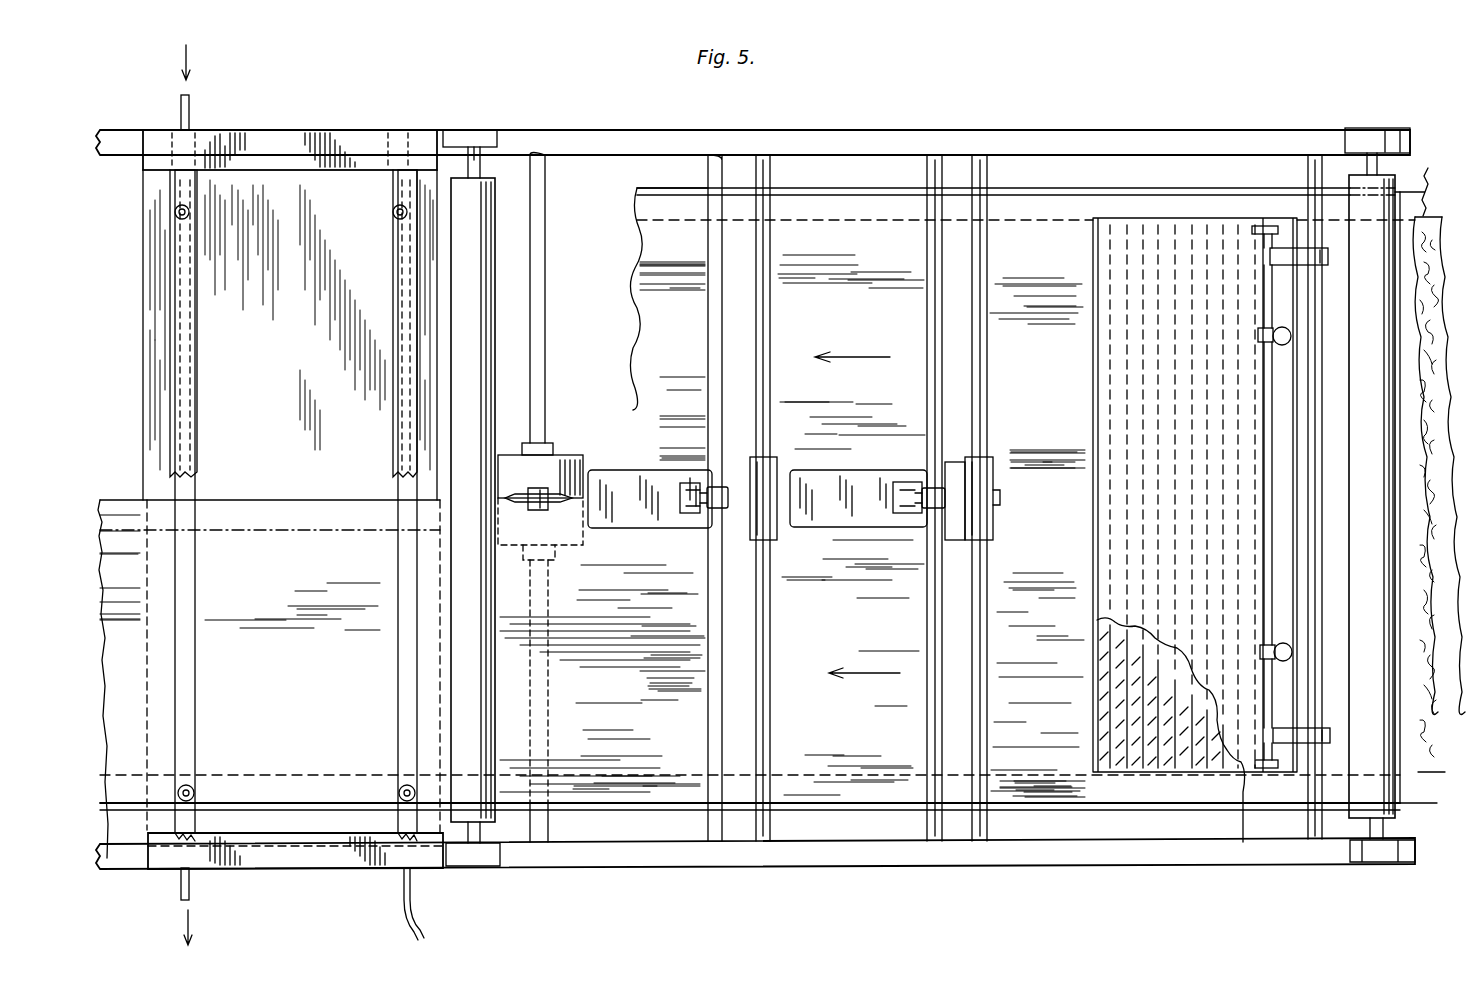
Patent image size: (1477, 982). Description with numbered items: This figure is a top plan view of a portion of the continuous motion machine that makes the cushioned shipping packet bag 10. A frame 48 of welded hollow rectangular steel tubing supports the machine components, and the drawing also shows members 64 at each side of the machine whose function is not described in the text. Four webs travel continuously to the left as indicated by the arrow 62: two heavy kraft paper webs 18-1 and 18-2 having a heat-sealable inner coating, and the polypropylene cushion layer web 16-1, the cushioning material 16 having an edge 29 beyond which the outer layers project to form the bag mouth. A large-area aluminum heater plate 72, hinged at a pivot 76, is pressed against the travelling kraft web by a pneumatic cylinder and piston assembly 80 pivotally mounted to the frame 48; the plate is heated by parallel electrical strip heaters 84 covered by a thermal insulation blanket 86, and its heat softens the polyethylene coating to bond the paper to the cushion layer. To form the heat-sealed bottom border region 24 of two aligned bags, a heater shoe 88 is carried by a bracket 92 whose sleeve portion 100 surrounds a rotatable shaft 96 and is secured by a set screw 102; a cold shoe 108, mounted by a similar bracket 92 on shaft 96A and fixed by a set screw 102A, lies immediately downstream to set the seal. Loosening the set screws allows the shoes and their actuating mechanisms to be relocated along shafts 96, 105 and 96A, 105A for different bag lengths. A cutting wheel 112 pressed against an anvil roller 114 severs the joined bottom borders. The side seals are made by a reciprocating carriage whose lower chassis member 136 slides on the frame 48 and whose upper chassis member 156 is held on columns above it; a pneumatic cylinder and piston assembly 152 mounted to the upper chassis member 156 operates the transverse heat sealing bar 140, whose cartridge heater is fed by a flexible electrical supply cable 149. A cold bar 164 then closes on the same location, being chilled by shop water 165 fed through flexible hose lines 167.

The cushioned shipping packet bag 10 is at (125, 660).
The cushioning layer 16 is at (812, 772).
The cushion layer web 16-1 is at (1443, 775).
The kraft paper web 18-1 is at (1205, 195).
The kraft paper web 18-2 is at (1125, 188).
The heat-sealed bottom border region 24 is at (285, 512).
The edge of the cushioning material 29 is at (848, 222).
The frame 48 is at (1085, 100).
The arrow indicating web travel 62 is at (895, 338).
The column 64 is at (495, 345).
The heater plate 72 is at (1092, 548).
The pivot 76 is at (1312, 825).
The pneumatic cylinder and piston assembly 80 is at (1290, 330).
The electrical strip heater 84 is at (1170, 702).
The thermal insulation blanket 86 is at (1110, 628).
The heater shoe 88 is at (862, 472).
The bracket 92 is at (952, 482).
The rotatable shaft 96 is at (989, 345).
The rotatable shaft 96A is at (771, 332).
The sleeve portion 100 is at (993, 462).
The set screw 102 is at (995, 492).
The set screw 102A is at (728, 497).
The shaft 105 is at (927, 318).
The shaft 105A is at (708, 323).
The cold shoe 108 is at (640, 472).
The cutting wheel 112 is at (575, 510).
The anvil roller 114 is at (565, 455).
The lower chassis member 136 is at (157, 342).
The heat sealing bar 140 is at (396, 320).
The flexible electrical supply cable 149 is at (422, 900).
The pneumatic cylinder and piston assembly 152 is at (192, 222).
The upper chassis member 156 is at (262, 170).
The cold bar 164 is at (197, 312).
The shop water 165 is at (190, 55).
The flexible hose line 167 is at (190, 108).